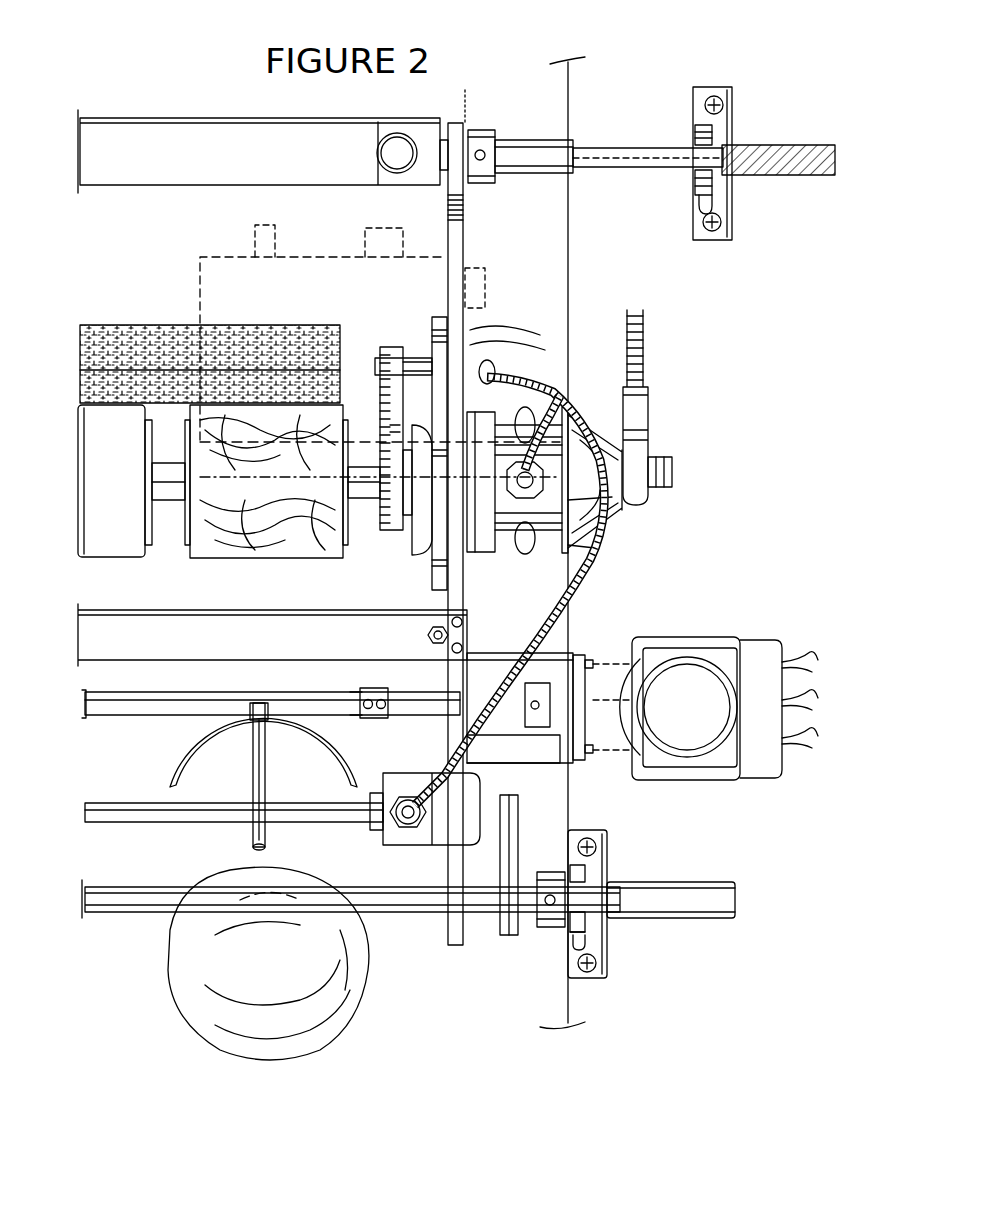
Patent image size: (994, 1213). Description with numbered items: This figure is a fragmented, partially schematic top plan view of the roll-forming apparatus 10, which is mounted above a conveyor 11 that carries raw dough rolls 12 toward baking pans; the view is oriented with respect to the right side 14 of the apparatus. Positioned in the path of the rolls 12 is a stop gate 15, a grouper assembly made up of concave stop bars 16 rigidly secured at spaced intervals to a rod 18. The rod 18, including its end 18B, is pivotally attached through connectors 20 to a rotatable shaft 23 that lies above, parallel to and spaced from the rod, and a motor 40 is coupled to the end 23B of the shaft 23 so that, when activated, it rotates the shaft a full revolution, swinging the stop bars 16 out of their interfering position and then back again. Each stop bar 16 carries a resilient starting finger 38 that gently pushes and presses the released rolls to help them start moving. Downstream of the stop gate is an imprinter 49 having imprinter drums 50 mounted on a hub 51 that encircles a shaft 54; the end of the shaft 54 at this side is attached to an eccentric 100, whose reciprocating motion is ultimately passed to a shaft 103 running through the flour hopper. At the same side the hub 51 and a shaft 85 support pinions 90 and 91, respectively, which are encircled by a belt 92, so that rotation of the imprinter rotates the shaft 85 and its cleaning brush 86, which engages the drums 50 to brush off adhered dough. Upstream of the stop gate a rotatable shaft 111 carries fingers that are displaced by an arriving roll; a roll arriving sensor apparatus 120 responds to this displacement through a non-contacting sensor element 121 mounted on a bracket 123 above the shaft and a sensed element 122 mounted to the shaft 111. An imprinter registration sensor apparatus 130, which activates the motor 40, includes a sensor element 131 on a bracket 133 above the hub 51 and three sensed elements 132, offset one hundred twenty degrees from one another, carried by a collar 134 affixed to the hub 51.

The roll-forming apparatus 10 is at (650, 86).
The conveyor 11 is at (570, 228).
The raw dough rolls 12 is at (350, 993).
The right side of apparatus 14 is at (470, 257).
The stop gate 15 is at (138, 722).
The stop bars 16 is at (186, 758).
The rod 18 is at (253, 697).
The end of rod 18B is at (356, 690).
The connector 20 is at (383, 720).
The rotatable shaft 23 is at (140, 705).
The end of shaft 23B is at (522, 700).
The resilient starting finger 38 is at (258, 771).
The motor 40 is at (708, 655).
The imprinter 49 is at (86, 538).
The imprinter drums 50 is at (226, 536).
The hub 51 is at (368, 498).
The shaft 54 is at (675, 472).
The shaft 85 is at (416, 362).
The cleaning brush 86 is at (150, 336).
The pinion 90 is at (346, 526).
The pinion 91 is at (371, 358).
The belt 92 is at (386, 426).
The eccentric 100 is at (660, 456).
The shaft 103 is at (652, 420).
The rotatable shaft 111 is at (138, 816).
The roll arriving sensor apparatus 120 is at (392, 830).
The non-contacting sensor element 121 is at (406, 846).
The non-contacted sensed element 122 is at (350, 821).
The bracket 123 is at (430, 838).
The imprinter registration sensor apparatus 130 is at (598, 420).
The non-contacting sensor element 131 is at (495, 536).
The non-contacted sensed elements 132 is at (525, 408).
The bracket 133 is at (598, 500).
The collar 134 is at (590, 546).